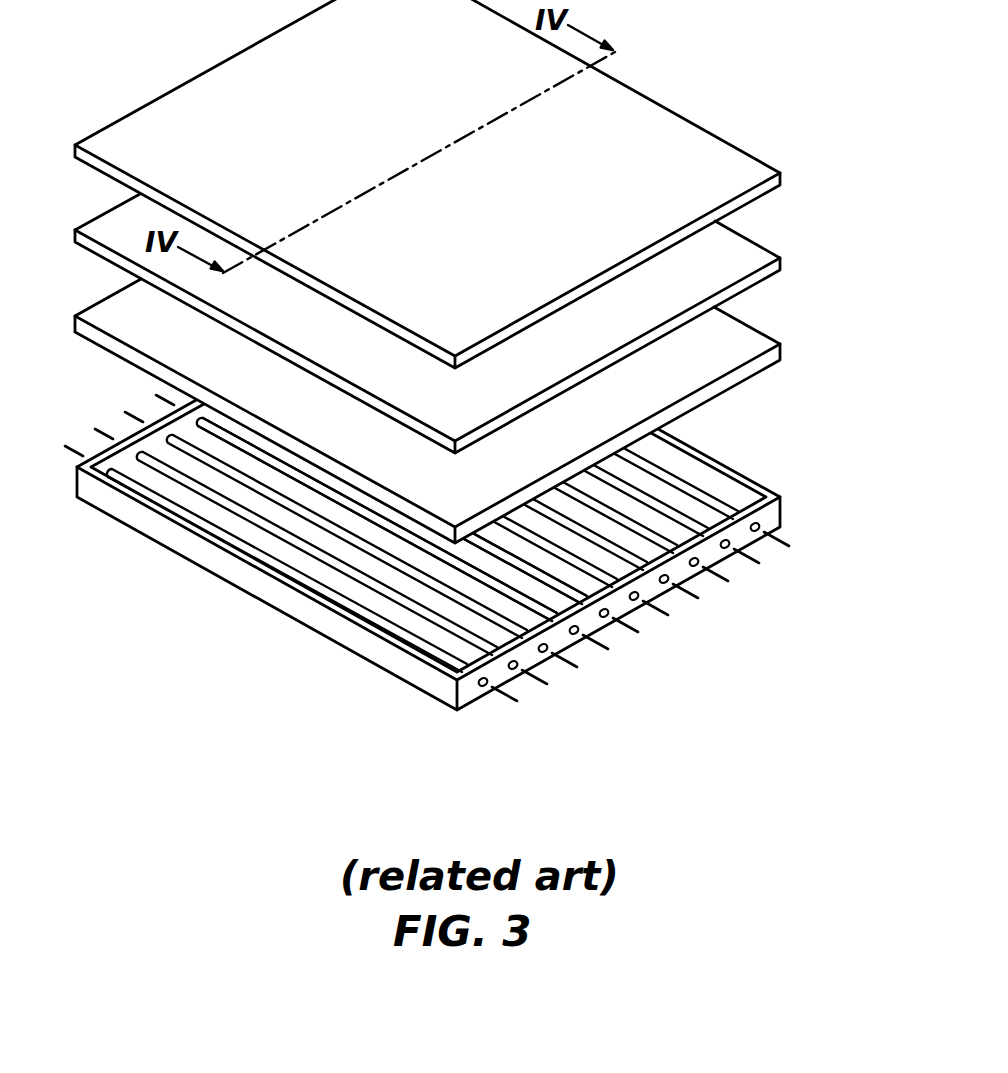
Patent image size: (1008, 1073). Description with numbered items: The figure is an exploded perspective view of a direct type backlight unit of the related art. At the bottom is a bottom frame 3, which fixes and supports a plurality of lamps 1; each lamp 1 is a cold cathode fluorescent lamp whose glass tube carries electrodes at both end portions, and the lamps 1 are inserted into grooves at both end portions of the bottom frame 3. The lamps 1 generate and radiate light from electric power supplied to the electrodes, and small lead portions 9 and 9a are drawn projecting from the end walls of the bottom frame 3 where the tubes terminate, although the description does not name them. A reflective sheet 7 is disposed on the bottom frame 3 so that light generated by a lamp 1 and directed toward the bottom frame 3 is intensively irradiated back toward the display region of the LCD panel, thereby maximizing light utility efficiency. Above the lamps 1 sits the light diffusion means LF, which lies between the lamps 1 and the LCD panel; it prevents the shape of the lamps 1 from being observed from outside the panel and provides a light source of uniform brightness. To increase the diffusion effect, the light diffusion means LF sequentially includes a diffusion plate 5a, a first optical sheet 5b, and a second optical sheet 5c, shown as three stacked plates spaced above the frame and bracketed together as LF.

The lamp 1 is at (285, 537).
The bottom frame 3 is at (422, 690).
The diffusion plate 5a is at (760, 341).
The optical sheet 5b is at (760, 251).
The optical sheet 5c is at (760, 164).
The light diffusion means LF is at (868, 142).
The reflective sheet 7 is at (372, 570).
The pins / leads 9 is at (507, 698).
The pins / leads 9a is at (78, 452).